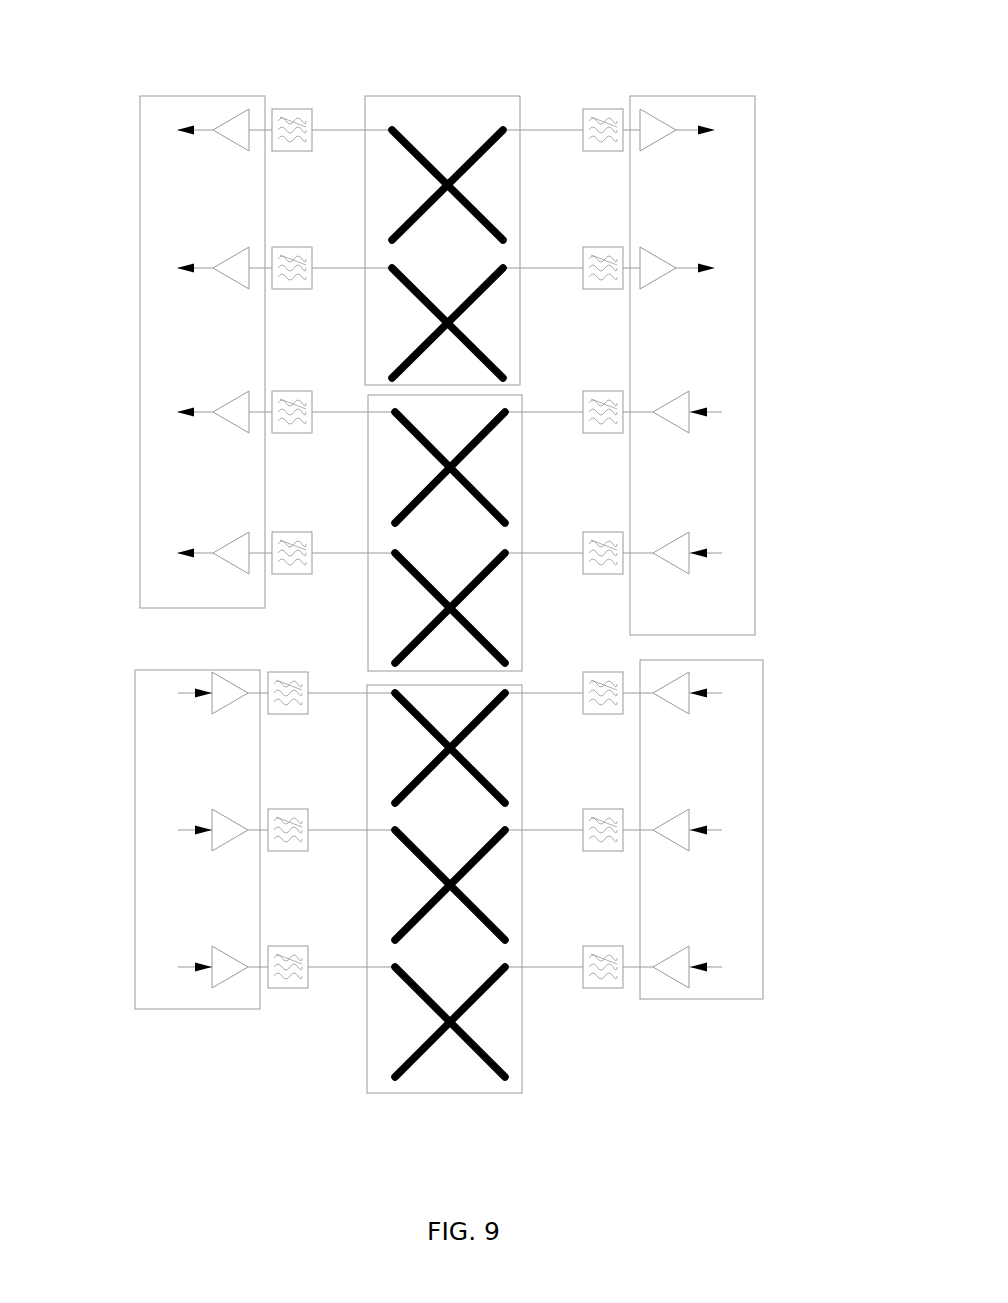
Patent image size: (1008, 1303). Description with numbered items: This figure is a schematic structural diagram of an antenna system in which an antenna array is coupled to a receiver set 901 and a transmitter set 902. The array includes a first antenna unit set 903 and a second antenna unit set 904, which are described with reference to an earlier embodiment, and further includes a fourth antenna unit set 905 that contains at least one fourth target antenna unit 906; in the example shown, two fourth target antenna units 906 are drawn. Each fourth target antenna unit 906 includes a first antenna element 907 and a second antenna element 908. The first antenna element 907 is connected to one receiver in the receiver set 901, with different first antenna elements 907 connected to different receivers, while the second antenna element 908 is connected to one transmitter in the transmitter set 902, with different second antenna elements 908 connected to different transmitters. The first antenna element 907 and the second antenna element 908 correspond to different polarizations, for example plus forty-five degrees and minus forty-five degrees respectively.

The receiver set 901 is at (205, 96).
The transmitter set 902 is at (198, 1009).
The first antenna unit set 903 is at (440, 96).
The second antenna unit set 904 is at (443, 1093).
The fourth antenna unit set 905 is at (461, 496).
The fourth target antenna unit 906 is at (455, 468).
The first antenna element 907 is at (410, 434).
The second antenna element 908 is at (488, 431).